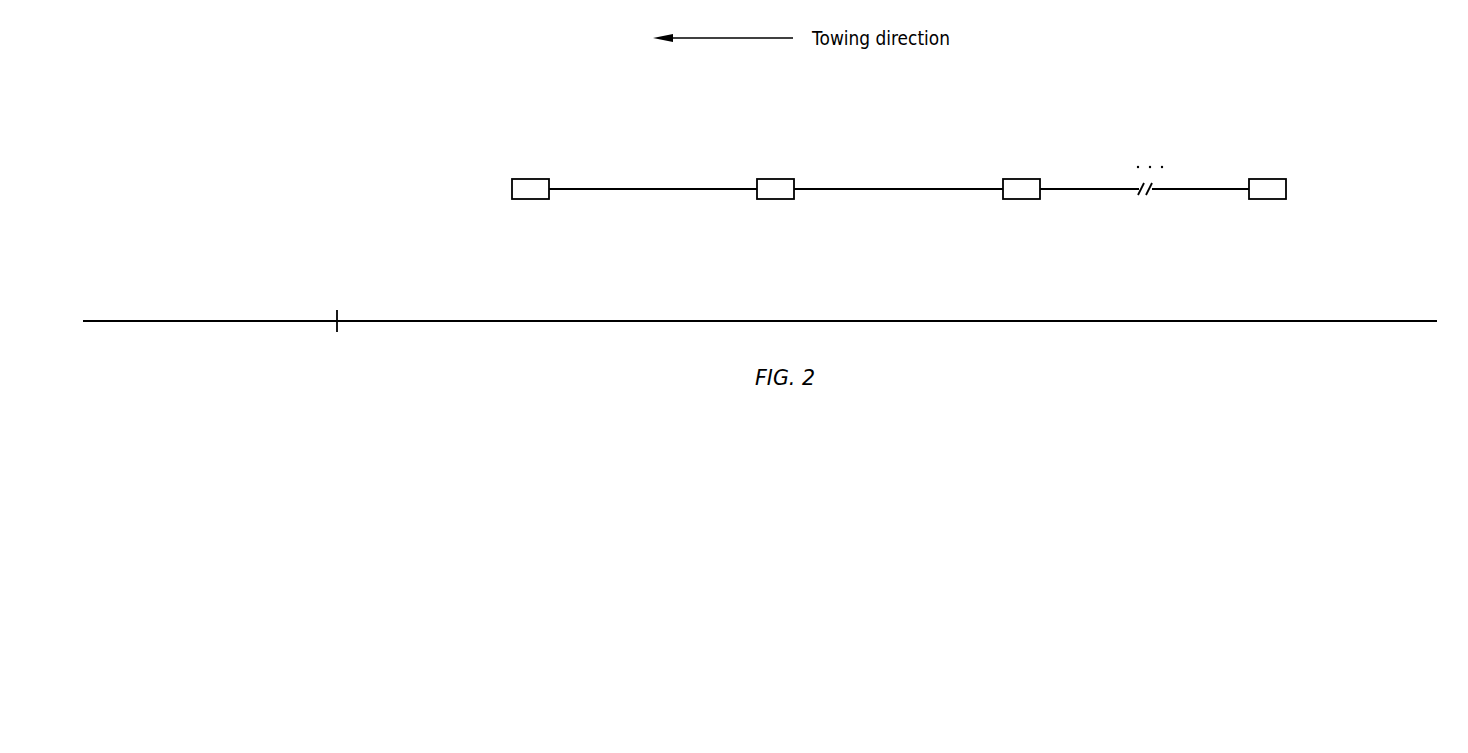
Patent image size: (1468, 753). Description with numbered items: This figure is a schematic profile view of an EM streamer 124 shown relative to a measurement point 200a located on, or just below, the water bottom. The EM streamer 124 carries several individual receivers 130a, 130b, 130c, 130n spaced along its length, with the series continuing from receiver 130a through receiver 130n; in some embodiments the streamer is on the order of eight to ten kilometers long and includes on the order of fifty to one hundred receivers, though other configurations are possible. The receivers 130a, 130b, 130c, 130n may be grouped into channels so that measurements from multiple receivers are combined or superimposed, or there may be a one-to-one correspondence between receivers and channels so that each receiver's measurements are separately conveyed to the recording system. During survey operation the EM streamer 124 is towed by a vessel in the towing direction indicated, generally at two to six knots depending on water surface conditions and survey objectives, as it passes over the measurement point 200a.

The receiver 130a is at (530, 179).
The receiver 130b is at (775, 179).
The receiver 130c is at (1022, 179).
The receiver 130n is at (1267, 179).
The EM streamer 124 is at (962, 213).
The measurement point 200a is at (760, 338).